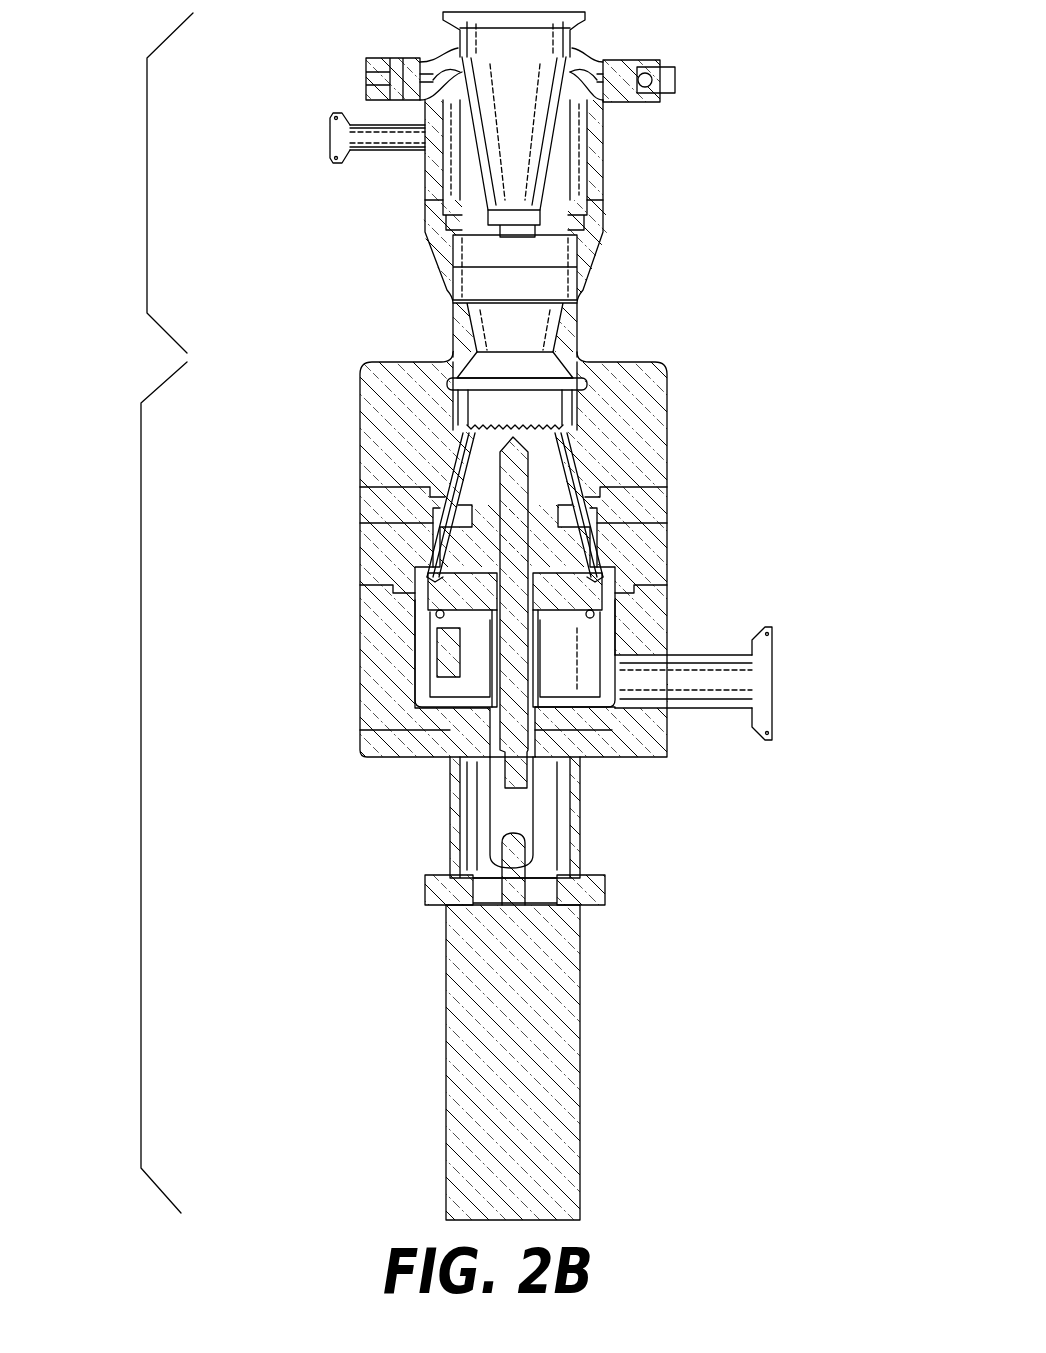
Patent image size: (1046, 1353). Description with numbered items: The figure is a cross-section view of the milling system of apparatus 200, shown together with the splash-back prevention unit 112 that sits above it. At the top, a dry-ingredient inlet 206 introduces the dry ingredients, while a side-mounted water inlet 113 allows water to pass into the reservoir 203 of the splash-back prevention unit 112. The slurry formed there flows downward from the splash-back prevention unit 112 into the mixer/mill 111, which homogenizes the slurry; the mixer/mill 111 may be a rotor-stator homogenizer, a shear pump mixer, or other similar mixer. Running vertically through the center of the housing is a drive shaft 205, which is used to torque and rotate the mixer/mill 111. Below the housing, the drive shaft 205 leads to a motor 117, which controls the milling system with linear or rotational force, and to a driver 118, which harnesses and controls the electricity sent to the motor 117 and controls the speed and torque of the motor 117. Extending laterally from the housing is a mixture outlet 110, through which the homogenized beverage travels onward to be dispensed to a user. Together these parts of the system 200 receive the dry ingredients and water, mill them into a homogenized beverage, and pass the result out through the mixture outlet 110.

The apparatus 200 is at (141, 775).
The splash-back prevention unit 112 is at (147, 172).
The dry-ingredient inlet 206 is at (485, 37).
The water inlet 113 is at (330, 142).
The reservoir 203 is at (437, 163).
The mixer/mill 111 is at (463, 436).
The drive shaft 205 is at (512, 703).
The mixture outlet 110 is at (760, 684).
The motor 117 is at (464, 983).
The driver 118 is at (461, 1068).